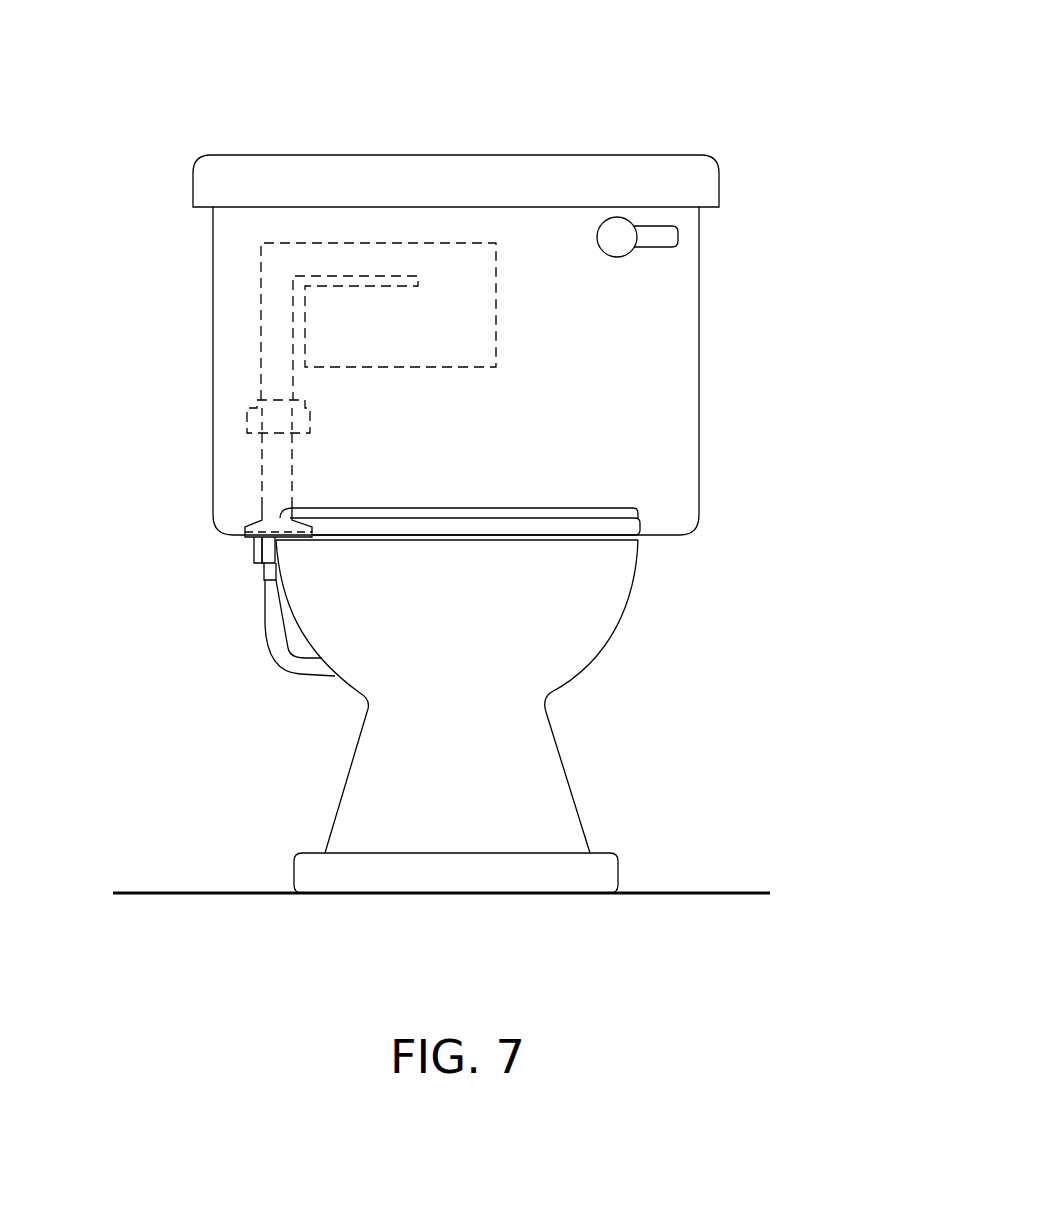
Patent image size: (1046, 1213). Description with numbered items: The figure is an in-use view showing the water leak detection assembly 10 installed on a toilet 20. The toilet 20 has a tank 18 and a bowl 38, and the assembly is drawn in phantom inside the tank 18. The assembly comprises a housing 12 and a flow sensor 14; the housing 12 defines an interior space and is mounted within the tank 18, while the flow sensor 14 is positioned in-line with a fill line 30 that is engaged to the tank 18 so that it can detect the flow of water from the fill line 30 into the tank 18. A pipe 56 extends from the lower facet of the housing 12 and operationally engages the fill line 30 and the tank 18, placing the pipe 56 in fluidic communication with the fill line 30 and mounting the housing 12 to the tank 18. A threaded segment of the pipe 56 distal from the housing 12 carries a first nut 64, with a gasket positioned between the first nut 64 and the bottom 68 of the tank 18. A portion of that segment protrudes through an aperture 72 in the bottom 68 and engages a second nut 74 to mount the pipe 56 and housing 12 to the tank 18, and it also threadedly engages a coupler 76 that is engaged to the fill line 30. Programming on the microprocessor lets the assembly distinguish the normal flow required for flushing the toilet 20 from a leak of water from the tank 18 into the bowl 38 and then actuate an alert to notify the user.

The water leak detection assembly 10 is at (732, 97).
The housing 12 is at (412, 238).
The flow sensor 14 is at (250, 420).
The tank 18 is at (672, 323).
The toilet 20 is at (589, 152).
The fill line 30 is at (307, 678).
The bowl 38 is at (562, 587).
The pipe 56 is at (258, 461).
The first nut 64 is at (252, 525).
The bottom 68 is at (656, 533).
The aperture 72 is at (250, 545).
The second nut 74 is at (250, 557).
The coupler 76 is at (265, 585).